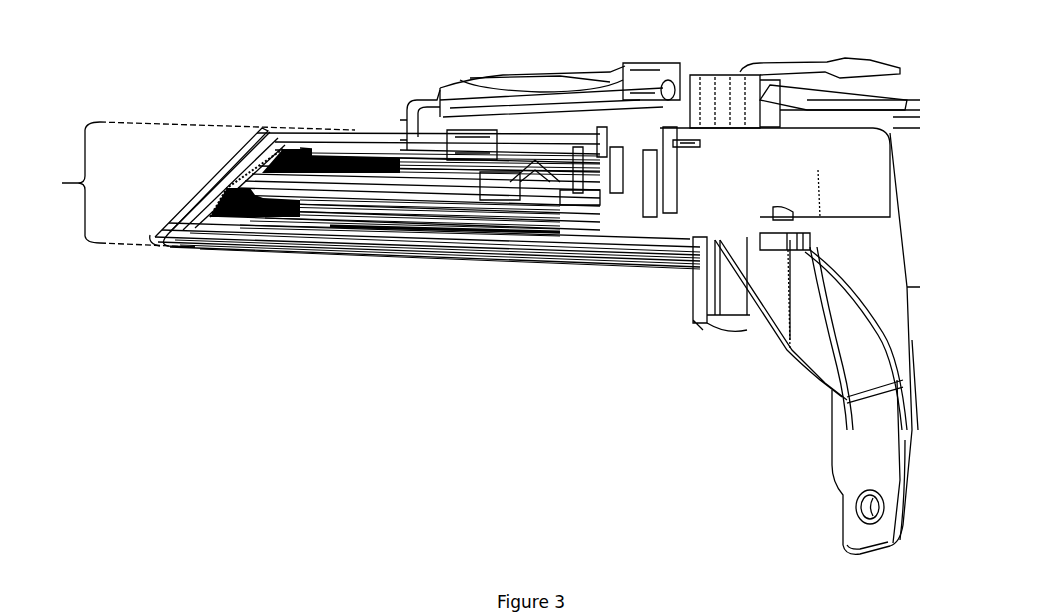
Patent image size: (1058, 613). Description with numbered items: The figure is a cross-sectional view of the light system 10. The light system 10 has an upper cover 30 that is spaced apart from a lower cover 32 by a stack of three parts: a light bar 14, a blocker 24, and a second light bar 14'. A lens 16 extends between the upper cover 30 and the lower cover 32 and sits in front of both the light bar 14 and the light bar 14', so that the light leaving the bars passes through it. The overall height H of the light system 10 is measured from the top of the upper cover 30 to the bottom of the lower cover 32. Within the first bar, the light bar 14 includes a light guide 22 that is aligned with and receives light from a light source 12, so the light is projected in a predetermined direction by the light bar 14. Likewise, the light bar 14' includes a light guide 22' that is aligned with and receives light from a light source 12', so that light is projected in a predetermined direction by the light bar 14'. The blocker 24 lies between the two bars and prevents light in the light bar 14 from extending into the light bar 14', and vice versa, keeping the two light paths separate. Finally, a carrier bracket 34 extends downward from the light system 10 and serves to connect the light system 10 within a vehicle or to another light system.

The light system 10 is at (317, 315).
The light source 12 is at (551, 82).
The light source 12' is at (651, 62).
The light bar 14 is at (320, 320).
The light bar 14' is at (721, 81).
The lens 16 is at (205, 192).
The light guide 22 is at (577, 227).
The light guide 22' is at (643, 237).
The blocker 24 is at (230, 197).
The upper cover 30 is at (765, 70).
The lower cover 32 is at (433, 258).
The carrier bracket 34 is at (850, 453).
The height H is at (62, 183).